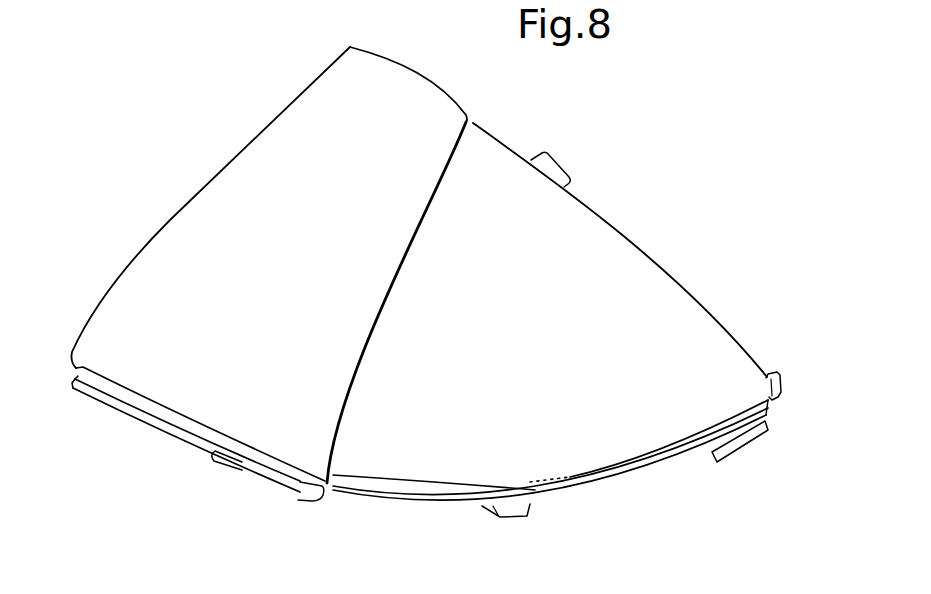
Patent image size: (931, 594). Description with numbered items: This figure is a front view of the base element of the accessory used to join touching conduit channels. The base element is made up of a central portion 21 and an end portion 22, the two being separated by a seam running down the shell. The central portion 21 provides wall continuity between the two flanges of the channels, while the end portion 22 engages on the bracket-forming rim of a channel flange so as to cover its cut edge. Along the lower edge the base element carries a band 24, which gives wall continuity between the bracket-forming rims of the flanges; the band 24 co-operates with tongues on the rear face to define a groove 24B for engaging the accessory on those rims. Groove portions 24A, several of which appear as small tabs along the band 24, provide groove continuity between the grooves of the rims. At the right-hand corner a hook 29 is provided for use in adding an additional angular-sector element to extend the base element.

The central portion 21 is at (579, 216).
The end portion 22 is at (231, 178).
The band 24 is at (612, 466).
The groove portions 24A is at (300, 490).
The groove 24B is at (156, 426).
The hook 29 is at (776, 370).